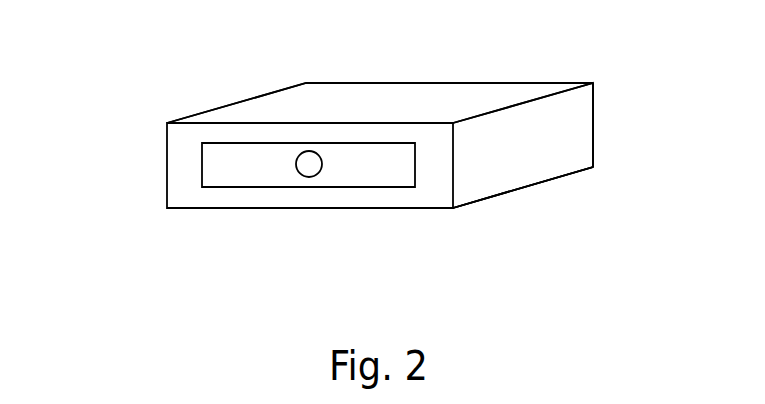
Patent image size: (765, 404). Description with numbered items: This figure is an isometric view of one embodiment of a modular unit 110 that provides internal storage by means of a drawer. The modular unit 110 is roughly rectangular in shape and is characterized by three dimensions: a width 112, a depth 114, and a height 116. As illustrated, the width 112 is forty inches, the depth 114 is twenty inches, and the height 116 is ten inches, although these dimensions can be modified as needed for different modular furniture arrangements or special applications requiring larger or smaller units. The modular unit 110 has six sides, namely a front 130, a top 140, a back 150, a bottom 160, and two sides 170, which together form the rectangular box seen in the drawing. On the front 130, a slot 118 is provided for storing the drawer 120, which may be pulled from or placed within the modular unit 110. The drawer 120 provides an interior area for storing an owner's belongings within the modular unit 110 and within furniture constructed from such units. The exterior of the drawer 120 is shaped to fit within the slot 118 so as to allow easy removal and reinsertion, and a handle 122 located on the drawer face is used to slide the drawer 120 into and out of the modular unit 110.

The modular unit 110 is at (123, 104).
The width 112 is at (200, 208).
The depth 114 is at (523, 188).
The height 116 is at (593, 103).
The slot 118 is at (377, 189).
The drawer 120 is at (210, 163).
The handle 122 is at (308, 172).
The front 130 is at (432, 197).
The top 140 is at (410, 97).
The back 150 is at (515, 83).
The bottom 160 is at (477, 203).
The sides 170 is at (246, 99).